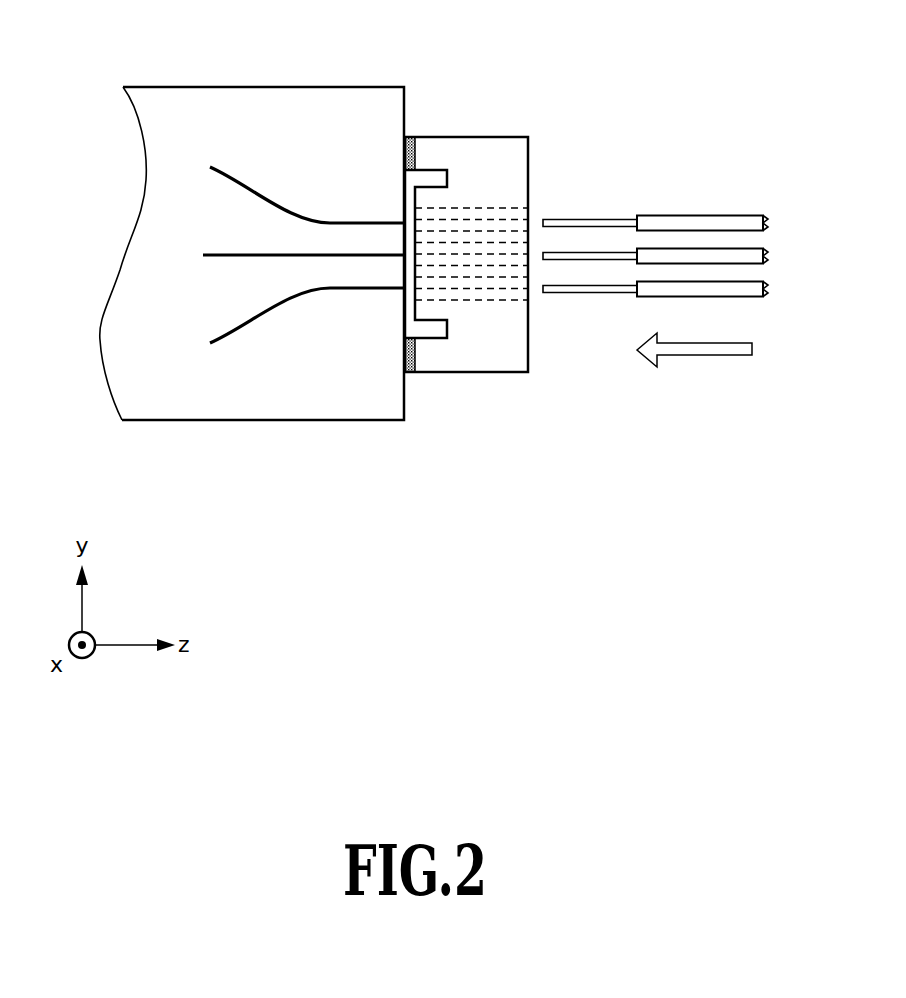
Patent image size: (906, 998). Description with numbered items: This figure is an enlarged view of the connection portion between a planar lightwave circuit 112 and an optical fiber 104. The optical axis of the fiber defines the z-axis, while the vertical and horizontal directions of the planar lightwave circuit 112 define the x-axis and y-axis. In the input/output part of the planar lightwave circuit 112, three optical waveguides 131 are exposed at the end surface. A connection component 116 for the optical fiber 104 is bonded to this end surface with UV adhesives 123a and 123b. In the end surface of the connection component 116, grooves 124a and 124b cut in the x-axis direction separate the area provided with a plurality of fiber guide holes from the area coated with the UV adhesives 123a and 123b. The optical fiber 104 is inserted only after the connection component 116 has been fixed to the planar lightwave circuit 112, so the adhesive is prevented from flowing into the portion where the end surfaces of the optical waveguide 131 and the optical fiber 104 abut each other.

The planar lightwave circuit 112 is at (173, 86).
The optical waveguides 131 is at (316, 330).
The connection component 116 is at (526, 137).
The UV adhesive 123a is at (410, 137).
The UV adhesive 123b is at (407, 375).
The groove 124a is at (448, 182).
The groove 124b is at (447, 330).
The optical fiber 104 is at (712, 328).